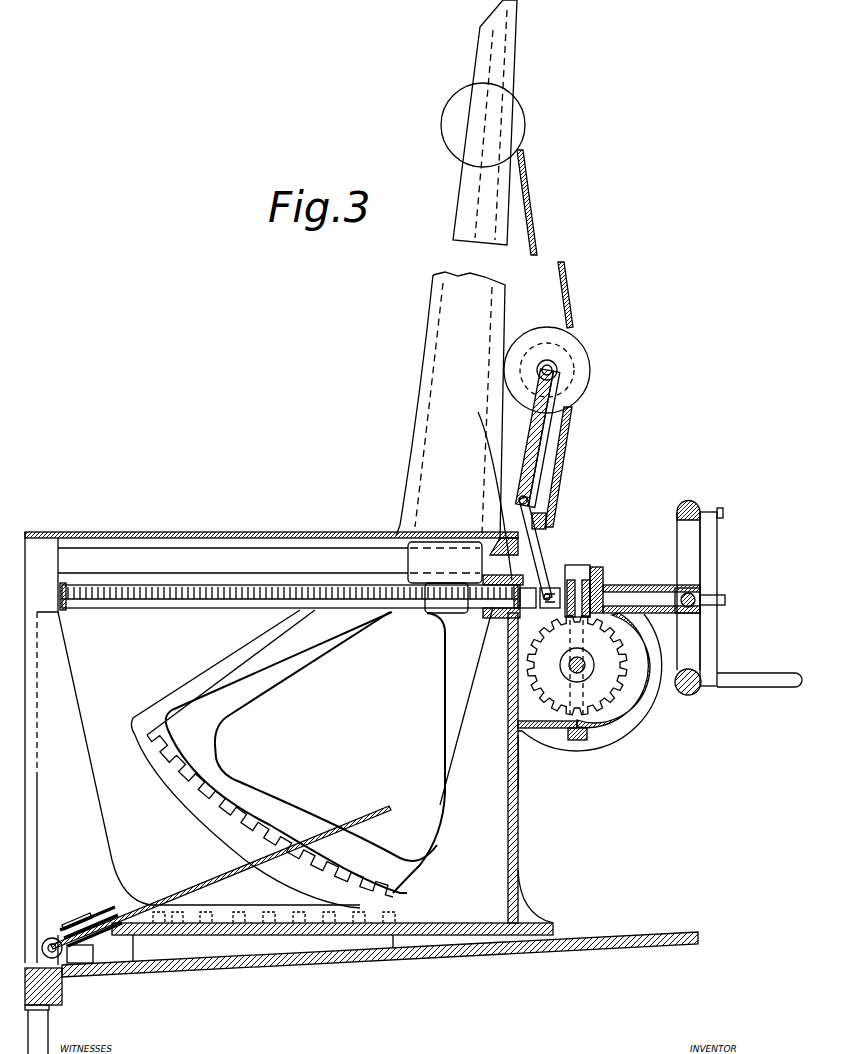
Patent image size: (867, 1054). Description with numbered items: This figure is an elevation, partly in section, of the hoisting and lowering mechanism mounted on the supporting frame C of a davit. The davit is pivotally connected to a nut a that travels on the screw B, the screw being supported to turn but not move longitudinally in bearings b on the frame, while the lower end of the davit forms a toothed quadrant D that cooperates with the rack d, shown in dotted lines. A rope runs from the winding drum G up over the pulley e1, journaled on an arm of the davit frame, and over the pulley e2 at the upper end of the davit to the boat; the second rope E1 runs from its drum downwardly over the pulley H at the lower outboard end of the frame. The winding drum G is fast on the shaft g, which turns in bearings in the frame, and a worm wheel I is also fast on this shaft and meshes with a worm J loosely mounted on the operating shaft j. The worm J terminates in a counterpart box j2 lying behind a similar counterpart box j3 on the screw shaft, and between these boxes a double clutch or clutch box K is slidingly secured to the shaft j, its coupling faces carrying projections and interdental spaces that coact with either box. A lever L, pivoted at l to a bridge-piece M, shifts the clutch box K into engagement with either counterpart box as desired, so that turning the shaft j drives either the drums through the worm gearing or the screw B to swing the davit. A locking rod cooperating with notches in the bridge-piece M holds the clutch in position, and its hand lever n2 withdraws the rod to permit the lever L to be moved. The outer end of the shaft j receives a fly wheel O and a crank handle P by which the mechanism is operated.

The supporting frame C is at (40, 548).
The pulley H is at (62, 950).
The screw B is at (160, 610).
The bearings b is at (64, 612).
The bridge-piece M is at (540, 530).
The nut a is at (430, 615).
The pulley e2 is at (522, 118).
The pulley e1 is at (582, 372).
The lever L is at (535, 495).
The hand lever n2 is at (482, 487).
The counterpart box j3 is at (483, 535).
The pivot l is at (562, 545).
The counterpart box j2 is at (572, 565).
The worm J is at (597, 565).
The operating shaft j is at (637, 597).
The double clutch or clutch box K is at (567, 633).
The shaft g is at (575, 666).
The winding drum G is at (636, 710).
The worm wheel I is at (608, 726).
The fly wheel O is at (690, 505).
The crank handle P is at (717, 560).
The toothed quadrant D is at (197, 808).
The rack d is at (390, 940).
The rope E1 is at (203, 887).